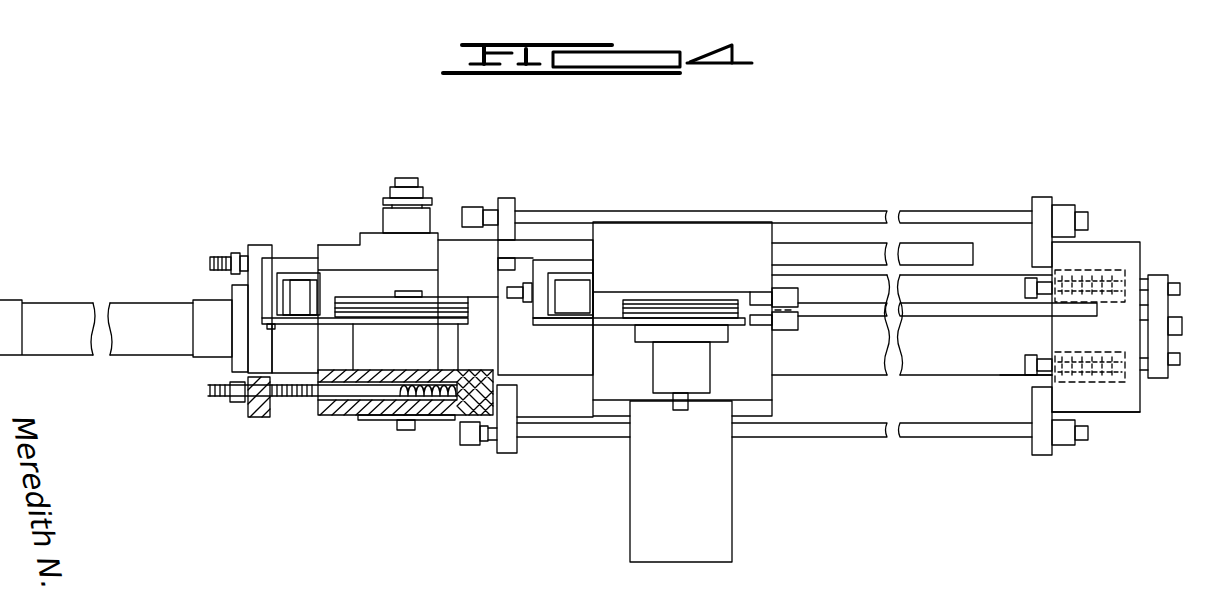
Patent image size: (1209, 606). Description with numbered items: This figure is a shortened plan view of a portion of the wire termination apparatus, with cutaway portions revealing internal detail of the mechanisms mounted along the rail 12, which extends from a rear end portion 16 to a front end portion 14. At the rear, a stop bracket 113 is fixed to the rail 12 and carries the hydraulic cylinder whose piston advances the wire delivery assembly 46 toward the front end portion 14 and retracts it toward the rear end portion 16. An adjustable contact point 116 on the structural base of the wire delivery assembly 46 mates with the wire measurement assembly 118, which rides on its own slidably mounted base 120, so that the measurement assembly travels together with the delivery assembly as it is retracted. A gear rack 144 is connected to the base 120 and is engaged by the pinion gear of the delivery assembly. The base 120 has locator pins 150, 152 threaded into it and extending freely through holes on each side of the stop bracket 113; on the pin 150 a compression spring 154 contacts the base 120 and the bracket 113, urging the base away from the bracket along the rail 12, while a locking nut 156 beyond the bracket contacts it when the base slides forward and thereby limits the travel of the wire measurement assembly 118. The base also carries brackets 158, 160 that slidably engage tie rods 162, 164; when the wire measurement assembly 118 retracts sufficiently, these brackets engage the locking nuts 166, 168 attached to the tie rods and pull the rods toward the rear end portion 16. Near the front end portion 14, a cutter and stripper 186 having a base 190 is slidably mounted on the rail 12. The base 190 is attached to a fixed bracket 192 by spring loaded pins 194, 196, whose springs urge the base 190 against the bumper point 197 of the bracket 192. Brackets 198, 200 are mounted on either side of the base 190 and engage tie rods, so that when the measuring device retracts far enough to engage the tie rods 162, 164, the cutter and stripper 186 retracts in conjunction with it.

The rail 12 is at (856, 381).
The front end portion 14 is at (1012, 376).
The rear end portion 16 is at (236, 364).
The wire delivery assembly 46 is at (727, 218).
The stop bracket 113 is at (260, 244).
The adjustable contact point 116 is at (513, 301).
The wire measurement assembly 118 is at (373, 232).
The slidably mounted base 120 is at (357, 421).
The gear rack 144 is at (812, 253).
The locator pin 150 is at (214, 396).
The locator pin 152 is at (230, 229).
The compression spring 154 is at (297, 399).
The locking nut 156 is at (233, 403).
The bracket 158 is at (510, 454).
The bracket 160 is at (507, 200).
The tie rod 162 is at (572, 438).
The tie rod 164 is at (582, 215).
The locking nut 166 is at (465, 446).
The locking nut 168 is at (470, 206).
The cutter and stripper 186 is at (1099, 243).
The base 190 is at (1138, 407).
The fixed bracket 192 is at (1158, 283).
The spring loaded pin 194 is at (1112, 270).
The spring loaded pin 196 is at (1103, 382).
The bumper point 197 is at (1140, 323).
The bracket 198 is at (1040, 200).
The bracket 200 is at (1045, 456).